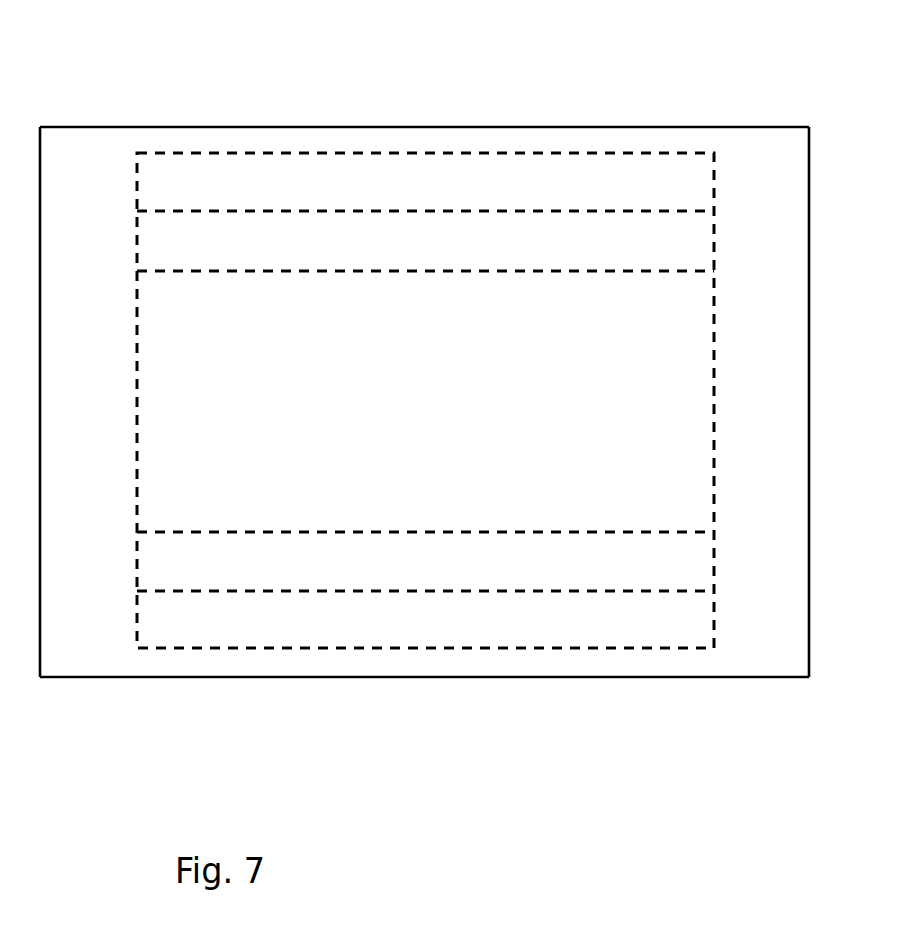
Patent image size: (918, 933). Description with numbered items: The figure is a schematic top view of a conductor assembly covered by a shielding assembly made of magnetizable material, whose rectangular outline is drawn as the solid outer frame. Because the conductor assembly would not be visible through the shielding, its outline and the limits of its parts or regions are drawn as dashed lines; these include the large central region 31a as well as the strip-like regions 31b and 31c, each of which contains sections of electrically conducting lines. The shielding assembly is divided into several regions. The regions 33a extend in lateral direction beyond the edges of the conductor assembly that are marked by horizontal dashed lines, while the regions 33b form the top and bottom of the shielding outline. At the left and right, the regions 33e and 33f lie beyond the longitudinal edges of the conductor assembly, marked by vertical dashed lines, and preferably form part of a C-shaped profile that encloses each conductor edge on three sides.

The region of the conductor assembly 31a is at (317, 403).
The region of the conductor assembly 31b is at (338, 622).
The region of the conductor assembly 31c is at (372, 183).
The region of the shielding assembly 33a is at (425, 410).
The region of the shielding assembly 33b is at (568, 127).
The region of the shielding assembly 33e is at (69, 437).
The region of the shielding assembly 33f is at (752, 437).